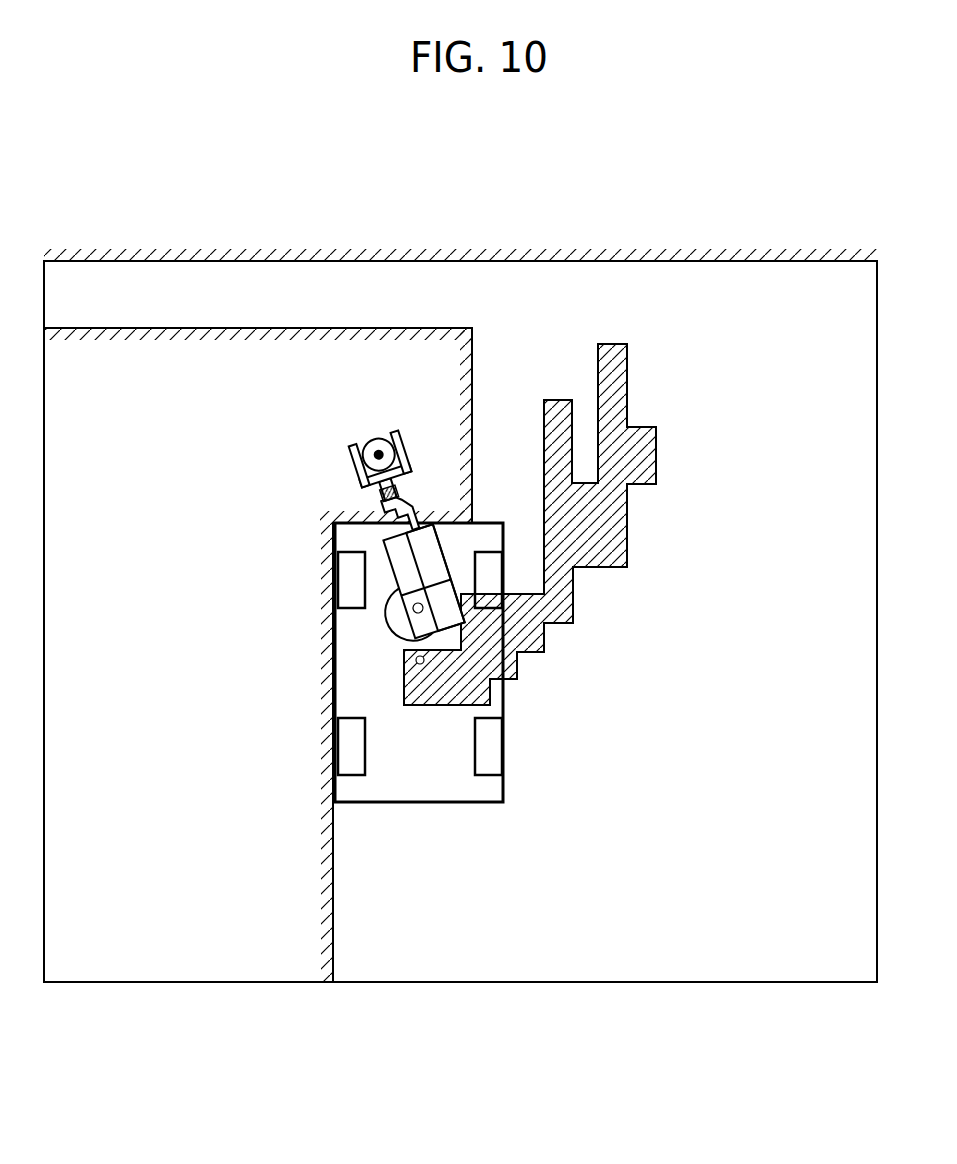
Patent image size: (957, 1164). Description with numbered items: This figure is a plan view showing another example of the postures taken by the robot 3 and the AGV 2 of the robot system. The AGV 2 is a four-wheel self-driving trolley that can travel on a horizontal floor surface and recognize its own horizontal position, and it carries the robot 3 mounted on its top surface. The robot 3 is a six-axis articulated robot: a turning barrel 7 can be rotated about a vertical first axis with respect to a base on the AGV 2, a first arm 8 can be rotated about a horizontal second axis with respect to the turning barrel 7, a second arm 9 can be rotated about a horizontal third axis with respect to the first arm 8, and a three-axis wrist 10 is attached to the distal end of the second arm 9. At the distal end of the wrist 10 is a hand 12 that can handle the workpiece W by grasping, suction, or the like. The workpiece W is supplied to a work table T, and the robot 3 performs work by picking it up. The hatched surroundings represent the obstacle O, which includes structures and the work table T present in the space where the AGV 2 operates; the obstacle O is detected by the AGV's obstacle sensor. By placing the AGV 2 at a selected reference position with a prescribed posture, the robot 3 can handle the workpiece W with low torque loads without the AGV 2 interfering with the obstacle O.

The work table T is at (262, 328).
The obstacle O is at (484, 350).
The Automated Guided Vehicle 2 is at (519, 752).
The robot 3 is at (463, 484).
The turning barrel 7 is at (388, 624).
The first arm 8 is at (457, 584).
The second arm 9 is at (393, 566).
The wrist 10 is at (424, 478).
The hand 12 is at (352, 458).
The workpiece W is at (368, 440).